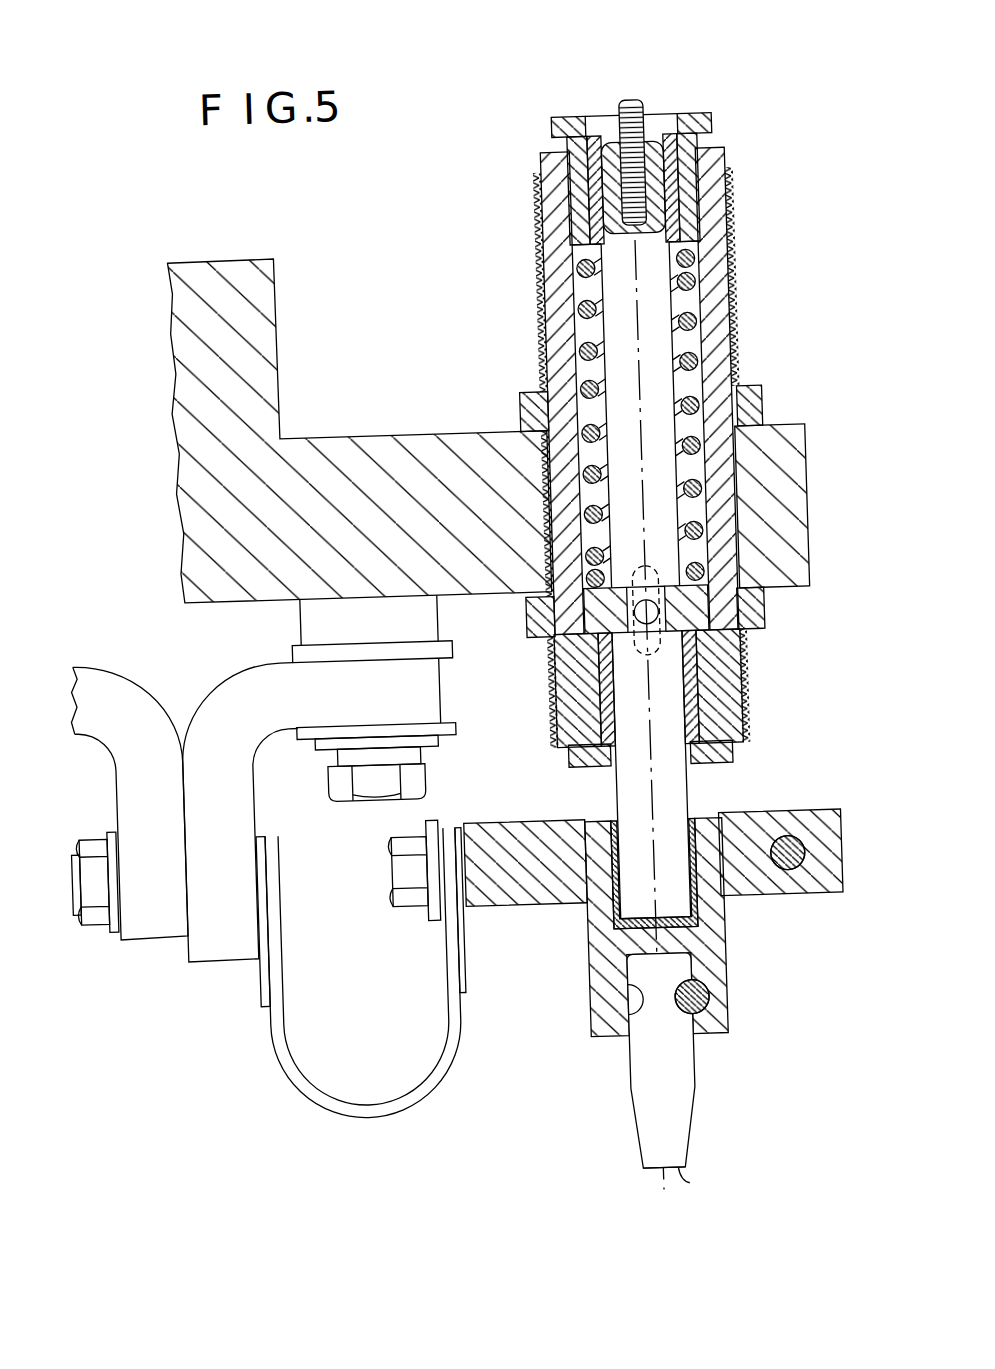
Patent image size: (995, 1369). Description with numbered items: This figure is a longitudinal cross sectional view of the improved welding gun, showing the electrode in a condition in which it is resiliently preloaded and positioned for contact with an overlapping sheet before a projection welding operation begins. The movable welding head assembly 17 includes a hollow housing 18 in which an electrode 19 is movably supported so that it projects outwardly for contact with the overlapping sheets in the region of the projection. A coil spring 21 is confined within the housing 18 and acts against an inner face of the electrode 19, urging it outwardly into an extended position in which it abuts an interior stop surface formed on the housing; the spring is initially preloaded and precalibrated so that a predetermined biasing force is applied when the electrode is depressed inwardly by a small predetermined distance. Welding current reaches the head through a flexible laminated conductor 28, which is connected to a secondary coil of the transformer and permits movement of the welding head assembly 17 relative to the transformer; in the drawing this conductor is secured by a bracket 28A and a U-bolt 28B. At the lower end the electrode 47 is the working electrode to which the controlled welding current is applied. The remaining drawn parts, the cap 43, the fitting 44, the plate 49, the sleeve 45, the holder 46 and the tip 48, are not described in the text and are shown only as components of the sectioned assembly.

The movable welding head assembly 17 is at (438, 329).
The hollow housing 18 is at (738, 266).
The electrode 19 is at (689, 795).
The spring 21 is at (704, 322).
The adjusting cap 43 is at (728, 150).
The pipe fitting 44 is at (274, 544).
The conductor 28 is at (121, 726).
The mounting bracket 28A is at (236, 756).
The U-bolt 28B is at (276, 1058).
The mounting plate 49 is at (506, 878).
The bushing sleeve 45 is at (632, 892).
The nozzle holder 46 is at (703, 947).
The electrode 47 is at (673, 1076).
The nozzle tip 48 is at (672, 1184).